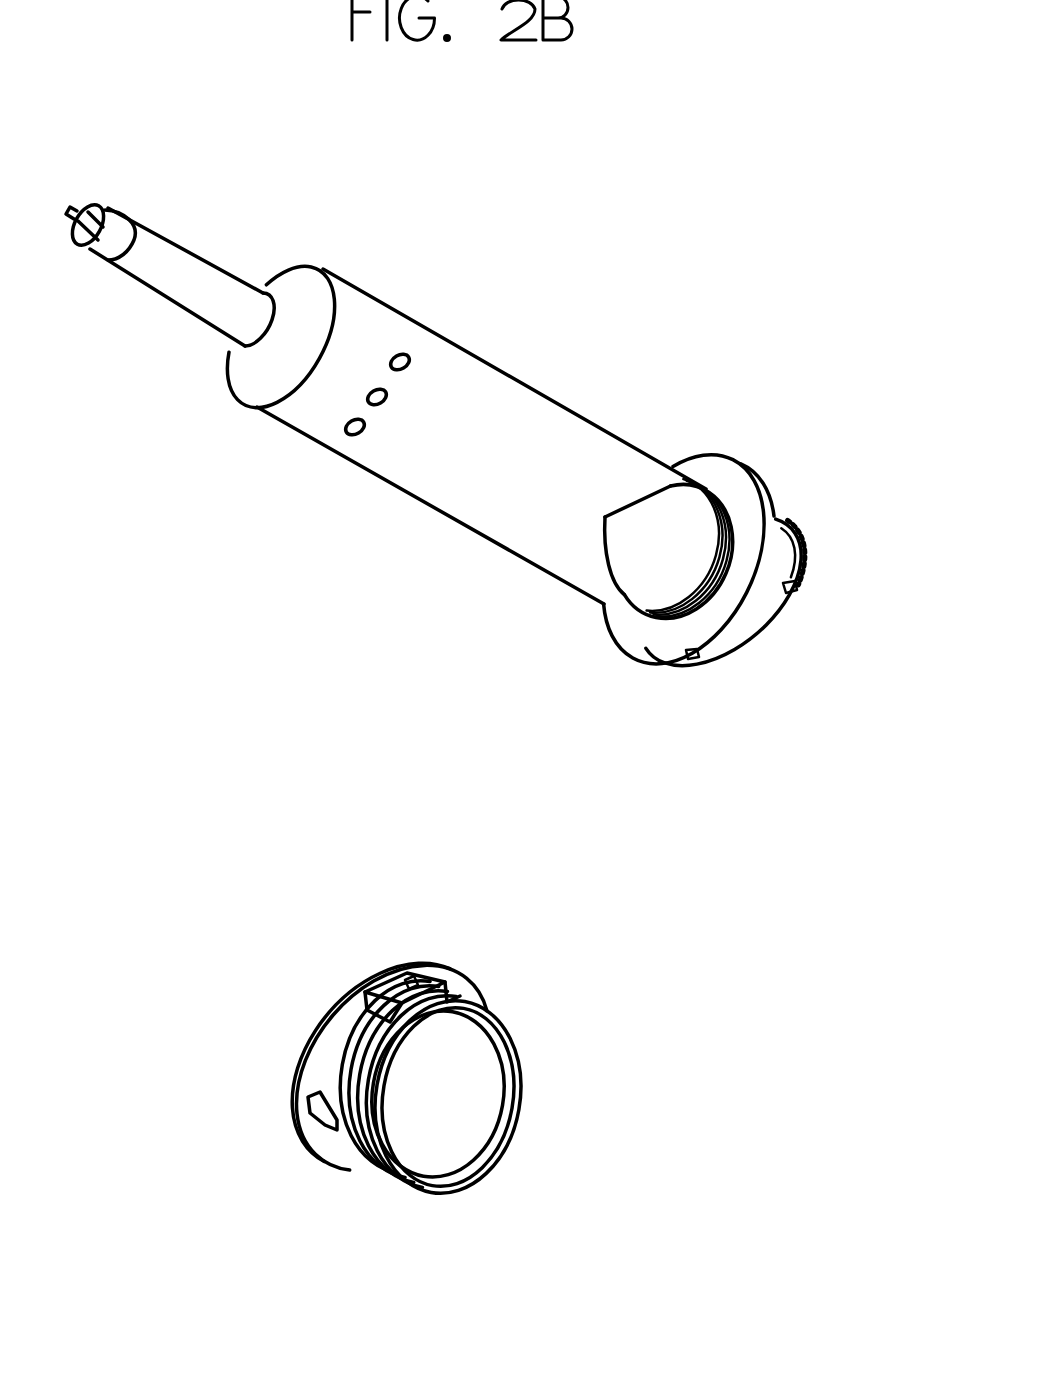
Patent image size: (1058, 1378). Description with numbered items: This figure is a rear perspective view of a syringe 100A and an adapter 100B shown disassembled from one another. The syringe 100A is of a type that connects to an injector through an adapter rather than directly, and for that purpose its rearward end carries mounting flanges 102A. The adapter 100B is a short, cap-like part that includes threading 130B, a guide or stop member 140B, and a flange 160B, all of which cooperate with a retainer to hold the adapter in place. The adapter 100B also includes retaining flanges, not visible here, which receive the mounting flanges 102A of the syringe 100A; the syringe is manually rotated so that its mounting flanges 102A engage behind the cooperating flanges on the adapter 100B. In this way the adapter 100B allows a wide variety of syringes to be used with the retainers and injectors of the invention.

The syringe 100A is at (498, 503).
The mounting flanges 102A is at (800, 593).
The adapter 100B is at (465, 1101).
The threading 130B is at (423, 1198).
The guide or stop member 140B is at (388, 990).
The flange 160B is at (333, 1005).